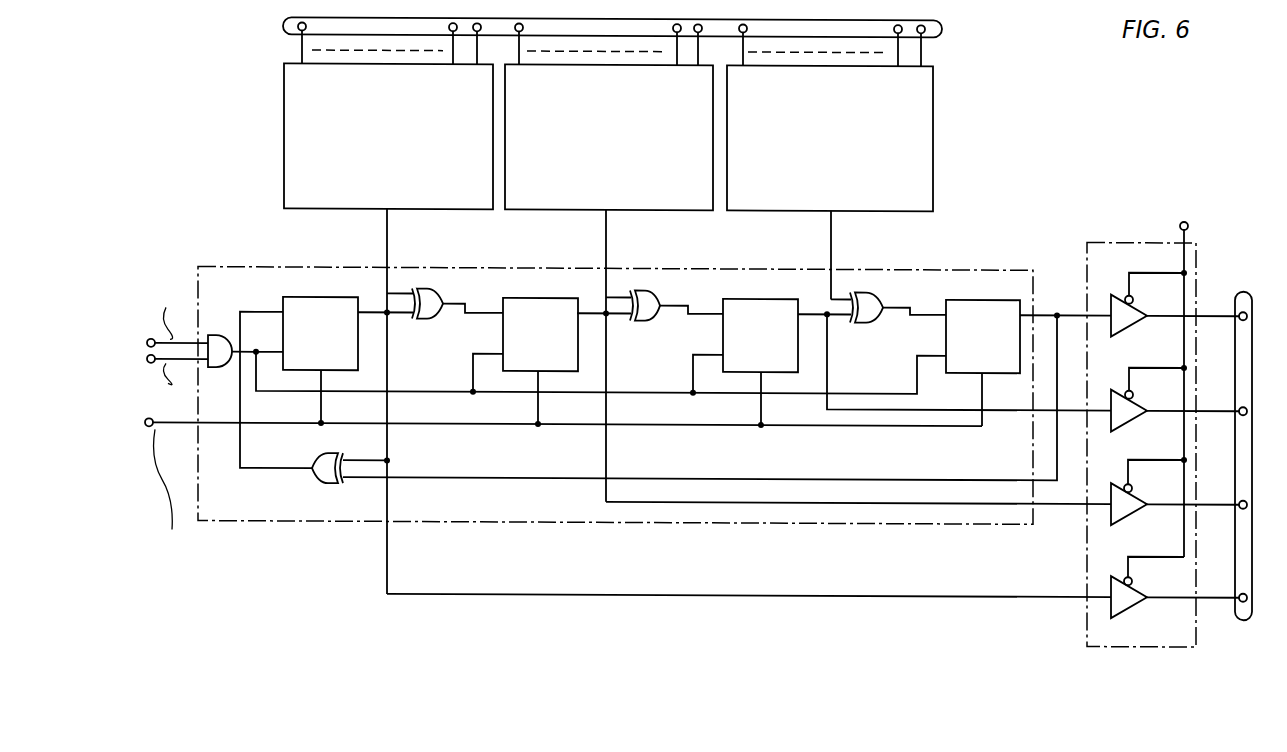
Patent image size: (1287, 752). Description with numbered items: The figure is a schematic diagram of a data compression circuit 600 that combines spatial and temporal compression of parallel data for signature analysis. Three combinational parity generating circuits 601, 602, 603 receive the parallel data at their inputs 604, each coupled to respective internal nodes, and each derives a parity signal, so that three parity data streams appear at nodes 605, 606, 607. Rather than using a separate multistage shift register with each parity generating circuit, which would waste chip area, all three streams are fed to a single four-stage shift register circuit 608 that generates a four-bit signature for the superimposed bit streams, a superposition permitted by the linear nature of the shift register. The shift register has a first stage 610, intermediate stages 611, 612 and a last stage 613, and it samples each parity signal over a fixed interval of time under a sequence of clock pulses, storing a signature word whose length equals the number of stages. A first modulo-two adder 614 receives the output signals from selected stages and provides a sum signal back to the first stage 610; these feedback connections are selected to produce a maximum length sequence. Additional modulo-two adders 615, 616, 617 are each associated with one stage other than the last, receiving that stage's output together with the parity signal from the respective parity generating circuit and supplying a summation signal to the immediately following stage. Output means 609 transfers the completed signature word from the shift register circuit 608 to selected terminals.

The data compression circuit 600 is at (1182, 103).
The combinational parity generating circuit 601 is at (346, 209).
The combinational parity generating circuit 602 is at (557, 209).
The combinational parity generating circuit 603 is at (779, 209).
The inputs 604 is at (939, 33).
The node 605 is at (389, 245).
The node 606 is at (608, 244).
The node 607 is at (833, 242).
The four-stage shift register circuit 608 is at (272, 267).
The output means 609 is at (1130, 239).
The first stage 610 is at (318, 296).
The stage 611 is at (536, 296).
The stage 612 is at (752, 296).
The last stage 613 is at (975, 296).
The first modulo-2 adder 614 is at (313, 487).
The modulo-2 adder 615 is at (448, 280).
The modulo-2 adder 616 is at (653, 291).
The modulo-2 adder 617 is at (892, 283).